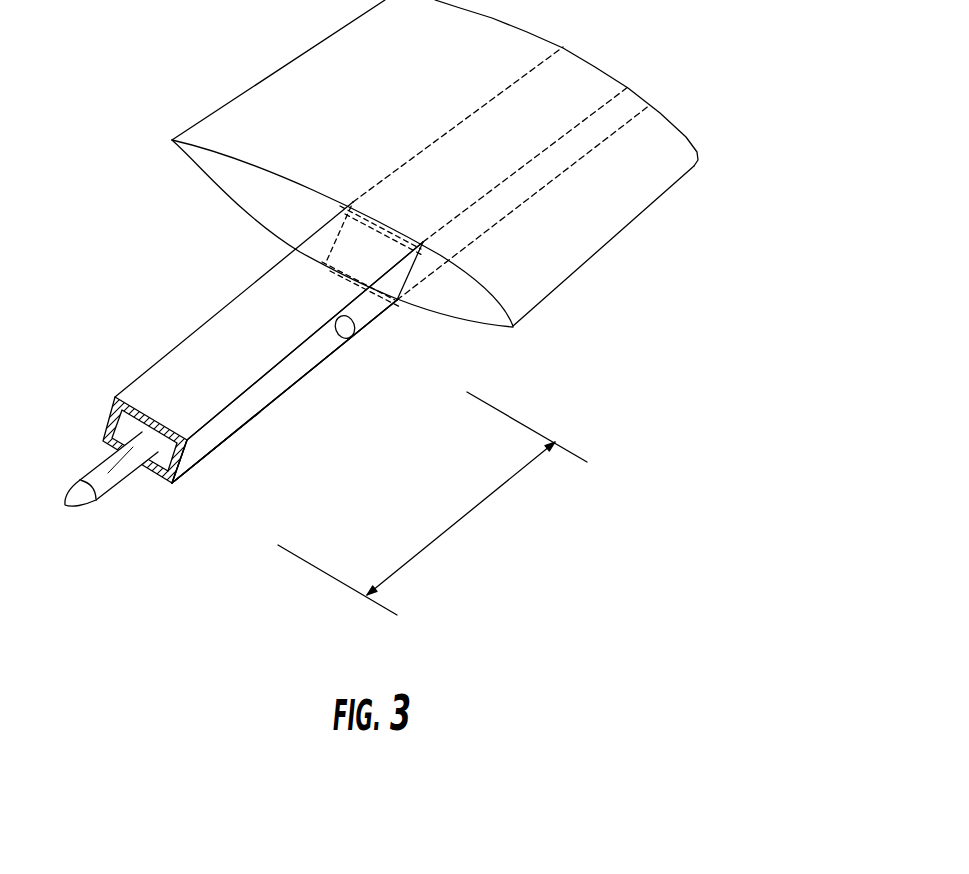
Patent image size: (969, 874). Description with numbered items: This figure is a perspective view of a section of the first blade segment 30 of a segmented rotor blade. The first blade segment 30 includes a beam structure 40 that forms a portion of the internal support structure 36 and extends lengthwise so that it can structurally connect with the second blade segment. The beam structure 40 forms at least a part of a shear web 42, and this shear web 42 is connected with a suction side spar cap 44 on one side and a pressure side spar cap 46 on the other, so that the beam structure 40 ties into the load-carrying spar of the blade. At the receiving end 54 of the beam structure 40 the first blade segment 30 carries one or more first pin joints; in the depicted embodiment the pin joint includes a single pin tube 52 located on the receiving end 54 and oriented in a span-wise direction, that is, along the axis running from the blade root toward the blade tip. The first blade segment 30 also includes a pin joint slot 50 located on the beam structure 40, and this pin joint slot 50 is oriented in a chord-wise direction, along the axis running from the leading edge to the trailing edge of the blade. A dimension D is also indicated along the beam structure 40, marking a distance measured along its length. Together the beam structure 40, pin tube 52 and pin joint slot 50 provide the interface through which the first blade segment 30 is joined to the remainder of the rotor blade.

The first blade segment 30 is at (278, 76).
The internal support structure 36 is at (277, 413).
The beam structure 40 is at (148, 380).
The shear web 42 is at (308, 362).
The suction side spar cap 44 is at (350, 279).
The pressure side spar cap 46 is at (388, 217).
The pin joint slot 50 is at (345, 327).
The pin tube 52 is at (116, 486).
The receiving end 54 is at (192, 475).
The distance D is at (432, 503).